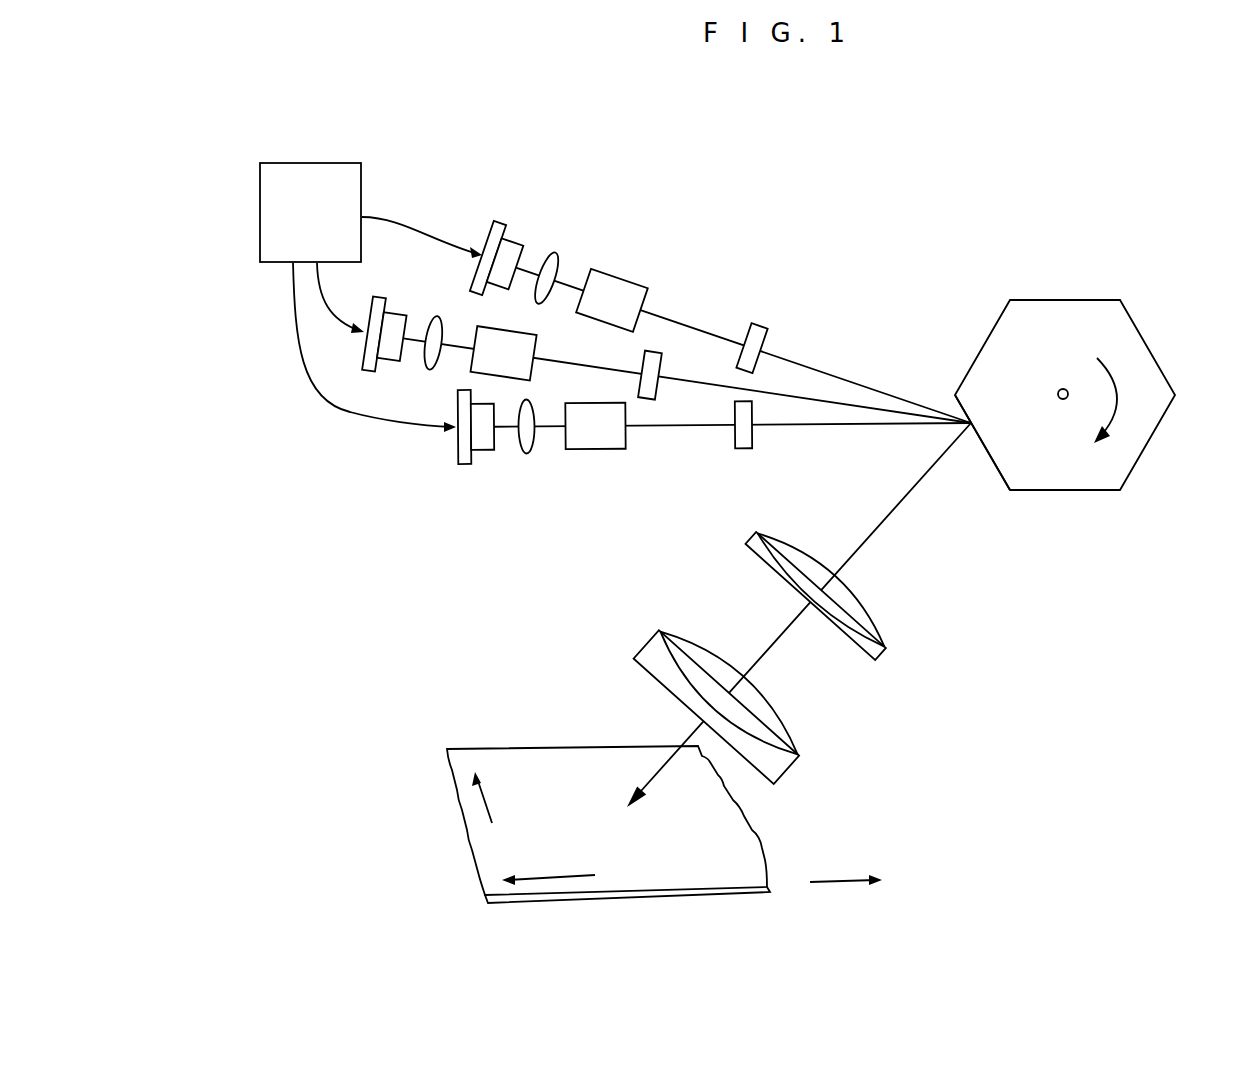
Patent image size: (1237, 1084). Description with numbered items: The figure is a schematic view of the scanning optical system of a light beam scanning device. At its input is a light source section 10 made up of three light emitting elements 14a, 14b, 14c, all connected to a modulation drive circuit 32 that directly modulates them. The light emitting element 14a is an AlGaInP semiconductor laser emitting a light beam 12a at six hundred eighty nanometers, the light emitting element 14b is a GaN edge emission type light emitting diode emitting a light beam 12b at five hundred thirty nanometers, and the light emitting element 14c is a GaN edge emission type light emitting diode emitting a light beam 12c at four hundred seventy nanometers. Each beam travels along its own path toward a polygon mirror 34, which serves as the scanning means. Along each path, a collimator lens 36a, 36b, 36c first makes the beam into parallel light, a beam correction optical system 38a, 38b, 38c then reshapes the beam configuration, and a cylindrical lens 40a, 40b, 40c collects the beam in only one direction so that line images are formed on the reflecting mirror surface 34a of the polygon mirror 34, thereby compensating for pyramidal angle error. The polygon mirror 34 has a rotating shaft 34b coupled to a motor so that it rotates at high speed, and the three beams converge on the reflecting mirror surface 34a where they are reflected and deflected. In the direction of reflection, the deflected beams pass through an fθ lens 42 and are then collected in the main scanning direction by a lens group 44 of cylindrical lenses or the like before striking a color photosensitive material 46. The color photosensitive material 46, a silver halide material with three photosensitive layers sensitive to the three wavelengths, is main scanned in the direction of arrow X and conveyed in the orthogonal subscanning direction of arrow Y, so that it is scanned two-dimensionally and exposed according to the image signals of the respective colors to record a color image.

The light source section 10 is at (541, 228).
The light beam 12a is at (865, 385).
The light beam 12b is at (830, 405).
The light beam 12c is at (867, 428).
The light emitting element 14a is at (495, 237).
The light emitting element 14b is at (402, 322).
The light emitting element 14c is at (478, 453).
The modulation drive circuit 32 is at (310, 172).
The polygon mirror 34 is at (1027, 318).
The reflecting mirror surface 34a is at (988, 452).
The rotating shaft 34b is at (1066, 389).
The collimator lens 36a is at (557, 252).
The collimator lens 36b is at (428, 355).
The collimator lens 36c is at (525, 448).
The beam correction optical system 38a is at (618, 298).
The beam correction optical system 38b is at (520, 365).
The beam correction optical system 38c is at (595, 442).
The cylindrical lens 40a is at (757, 337).
The cylindrical lens 40b is at (655, 372).
The cylindrical lens 40c is at (743, 438).
The fθ lens 42 is at (886, 642).
The lens group 44 is at (800, 745).
The color photosensitive material 46 is at (562, 760).